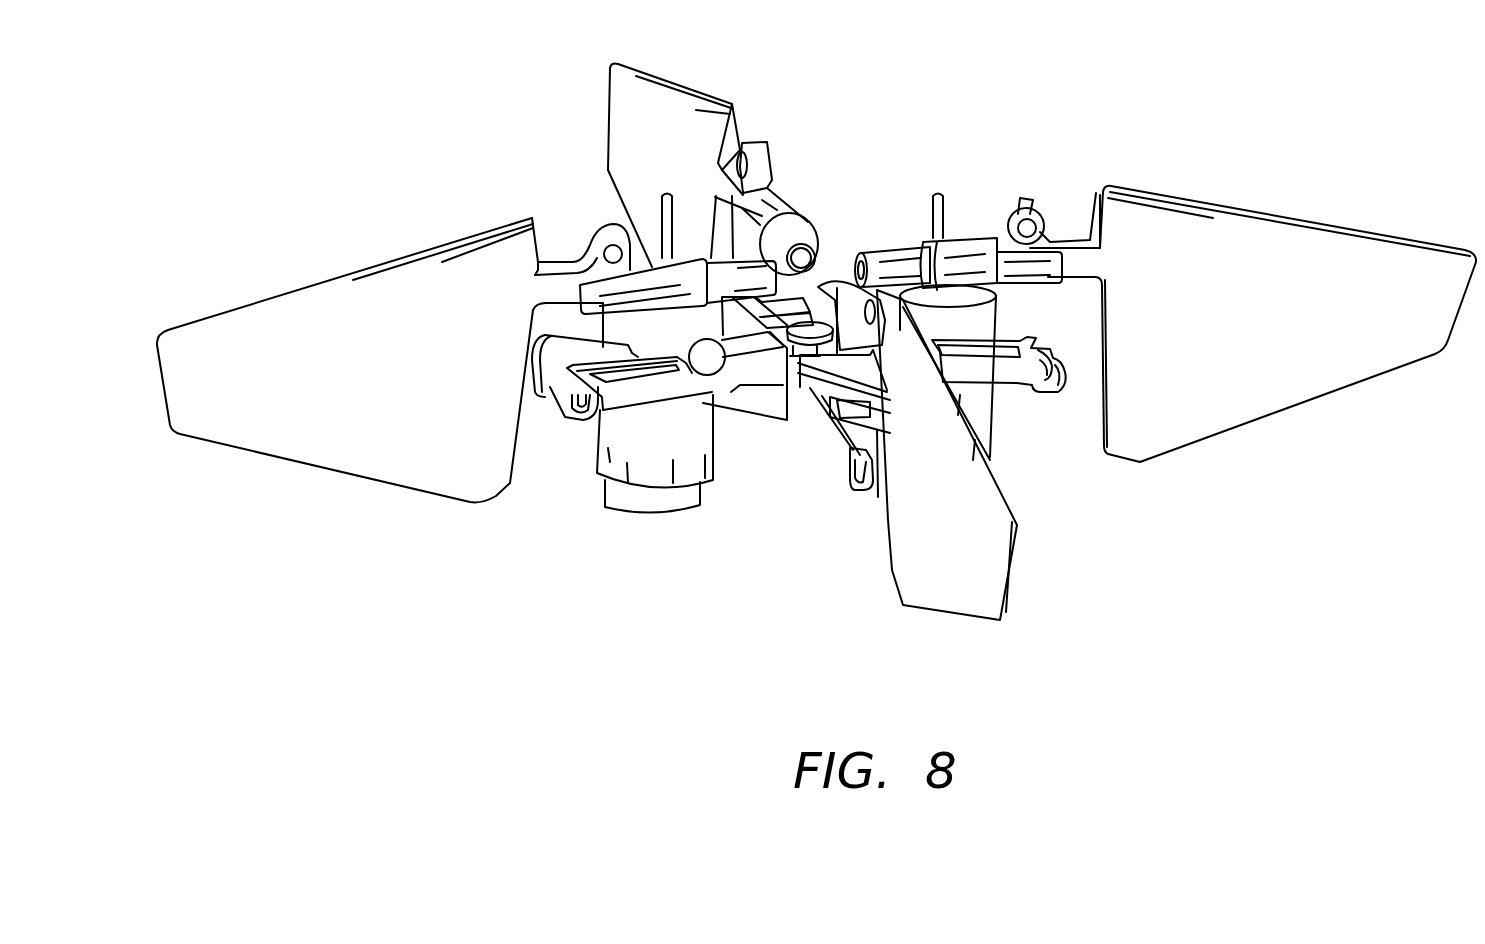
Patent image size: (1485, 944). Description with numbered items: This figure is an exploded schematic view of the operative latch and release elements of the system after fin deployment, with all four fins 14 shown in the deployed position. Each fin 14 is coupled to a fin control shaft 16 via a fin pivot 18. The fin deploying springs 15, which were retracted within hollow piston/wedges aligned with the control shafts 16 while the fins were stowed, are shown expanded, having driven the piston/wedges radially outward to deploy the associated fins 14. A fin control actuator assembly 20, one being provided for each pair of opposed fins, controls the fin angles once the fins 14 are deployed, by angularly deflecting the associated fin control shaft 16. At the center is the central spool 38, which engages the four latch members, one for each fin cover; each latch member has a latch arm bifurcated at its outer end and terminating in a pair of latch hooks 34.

The fin 14 is at (300, 304).
The fin deploying spring 15 is at (883, 263).
The fin control shaft 16 is at (953, 247).
The fin pivot 18 is at (1040, 222).
The fin control actuator assembly 20 is at (630, 527).
The latch hook 34 is at (1037, 396).
The central spool 38 is at (812, 312).